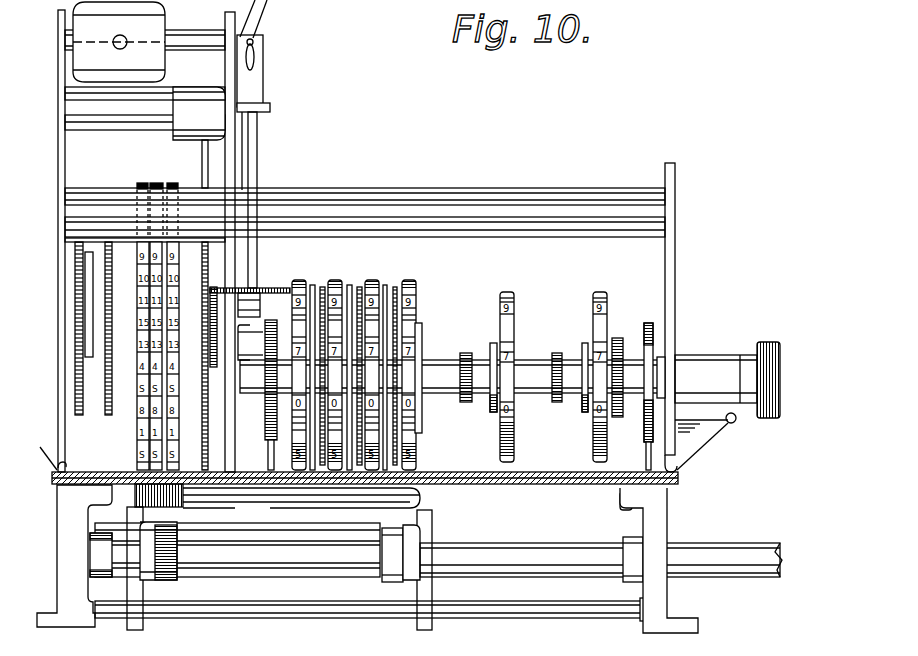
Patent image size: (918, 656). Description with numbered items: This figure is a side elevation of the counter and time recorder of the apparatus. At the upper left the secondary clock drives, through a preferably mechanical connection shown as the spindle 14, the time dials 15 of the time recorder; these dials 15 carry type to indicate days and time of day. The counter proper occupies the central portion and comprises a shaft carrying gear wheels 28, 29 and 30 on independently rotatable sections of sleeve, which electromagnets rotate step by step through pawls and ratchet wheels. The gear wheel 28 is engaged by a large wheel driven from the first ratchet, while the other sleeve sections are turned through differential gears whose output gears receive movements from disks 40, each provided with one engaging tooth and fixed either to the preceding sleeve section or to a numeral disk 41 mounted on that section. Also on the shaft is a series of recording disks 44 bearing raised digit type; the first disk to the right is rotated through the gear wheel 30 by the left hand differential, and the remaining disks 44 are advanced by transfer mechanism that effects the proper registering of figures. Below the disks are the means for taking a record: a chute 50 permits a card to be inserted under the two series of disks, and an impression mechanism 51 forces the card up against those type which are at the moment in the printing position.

The spindle 14 is at (263, 14).
The time dials 15 is at (146, 356).
The gear wheel 28 is at (621, 340).
The gear wheel 29 is at (556, 352).
The gear wheel 30 is at (465, 352).
The disk with one engaging tooth 40 is at (494, 410).
The numeral disk 41 is at (597, 295).
The recording disks 44 is at (345, 283).
The chute 50 is at (277, 499).
The impression mechanism 51 is at (422, 495).